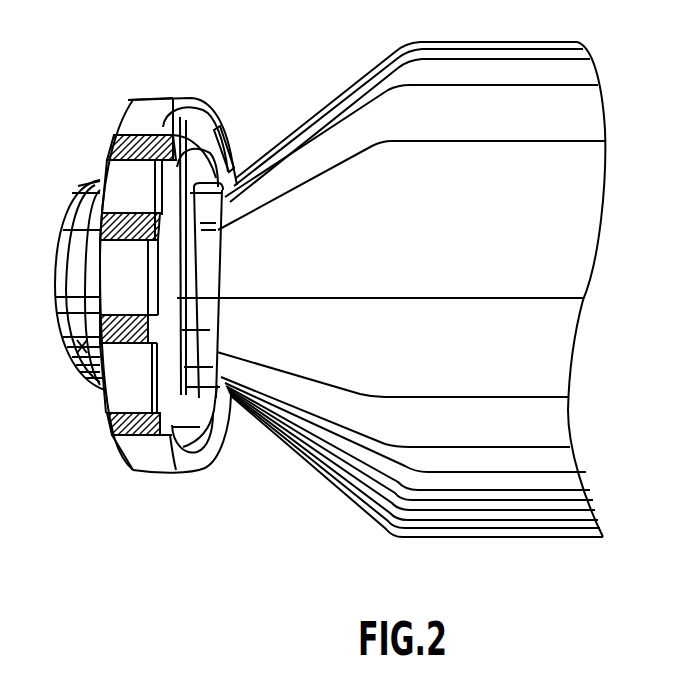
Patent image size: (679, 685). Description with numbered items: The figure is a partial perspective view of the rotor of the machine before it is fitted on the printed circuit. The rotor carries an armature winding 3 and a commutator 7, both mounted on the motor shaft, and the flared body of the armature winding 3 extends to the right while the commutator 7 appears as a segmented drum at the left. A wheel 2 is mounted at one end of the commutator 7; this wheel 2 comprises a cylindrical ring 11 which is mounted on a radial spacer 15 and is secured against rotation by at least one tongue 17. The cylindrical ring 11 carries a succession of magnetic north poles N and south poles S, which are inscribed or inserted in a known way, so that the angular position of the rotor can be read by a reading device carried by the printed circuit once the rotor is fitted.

The wheel 2 is at (168, 240).
The cylindrical ring 11 is at (156, 107).
The armature winding 3 is at (370, 416).
The commutator 7 is at (80, 373).
The radial spacer 15 is at (220, 157).
The tongue 17 is at (193, 173).
The magnetic north pole N is at (135, 113).
The magnetic south pole S is at (127, 182).